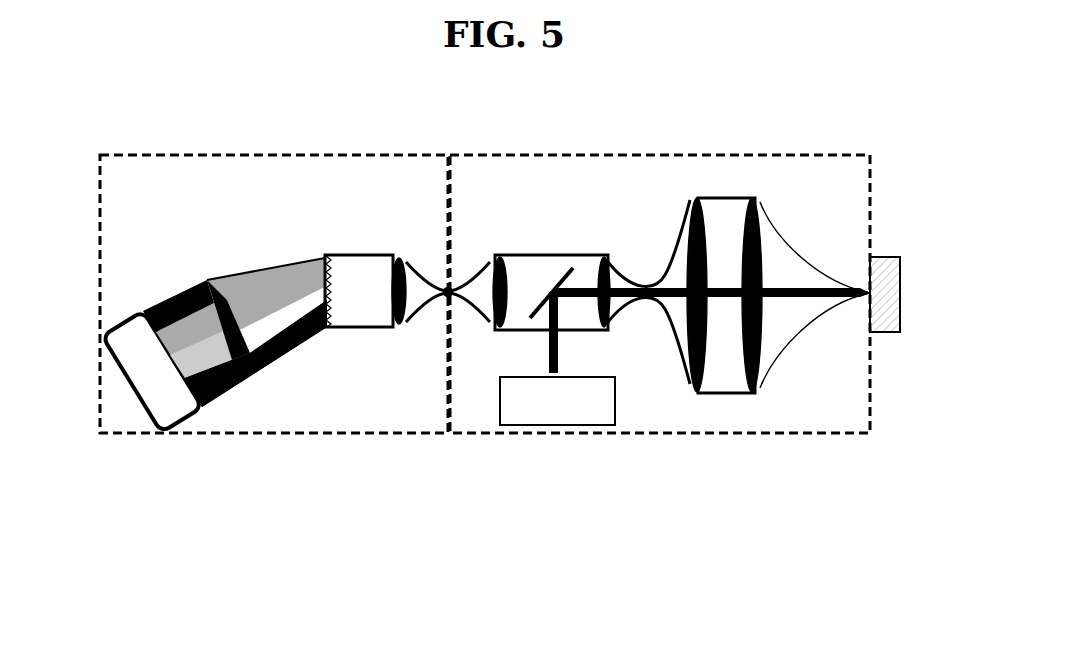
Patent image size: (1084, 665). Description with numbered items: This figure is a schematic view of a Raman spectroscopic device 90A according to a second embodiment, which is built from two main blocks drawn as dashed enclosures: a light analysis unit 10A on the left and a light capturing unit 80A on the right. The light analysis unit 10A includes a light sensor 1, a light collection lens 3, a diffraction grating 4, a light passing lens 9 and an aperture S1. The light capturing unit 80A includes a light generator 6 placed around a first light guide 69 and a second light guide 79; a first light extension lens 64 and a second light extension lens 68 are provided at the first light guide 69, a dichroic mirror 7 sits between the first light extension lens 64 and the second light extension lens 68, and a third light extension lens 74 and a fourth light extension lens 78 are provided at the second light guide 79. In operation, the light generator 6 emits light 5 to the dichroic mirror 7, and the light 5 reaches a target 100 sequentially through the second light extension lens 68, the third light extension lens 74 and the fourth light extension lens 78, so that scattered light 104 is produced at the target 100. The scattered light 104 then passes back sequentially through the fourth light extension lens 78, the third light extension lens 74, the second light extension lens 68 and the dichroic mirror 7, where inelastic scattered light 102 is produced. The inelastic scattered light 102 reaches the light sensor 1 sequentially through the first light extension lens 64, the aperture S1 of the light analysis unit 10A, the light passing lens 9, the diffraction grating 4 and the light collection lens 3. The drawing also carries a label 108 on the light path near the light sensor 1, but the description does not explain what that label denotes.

The light sensor 1 is at (182, 420).
The light collection lens 3 is at (202, 280).
The diffraction grating 4 is at (324, 257).
The light 5 is at (548, 345).
The light generator 6 is at (570, 425).
The dichroic mirror 7 is at (556, 270).
The light passing lens 9 is at (383, 270).
The first light extension lens 64 is at (487, 280).
The second light extension lens 68 is at (615, 285).
The first light guide 69 is at (471, 367).
The third light extension lens 74 is at (705, 222).
The fourth light extension lens 78 is at (740, 353).
The second light guide 79 is at (623, 358).
The light analysis unit 10A is at (100, 395).
The light capturing unit 80A is at (800, 433).
The Raman spectroscopic device 90A is at (465, 396).
The target 100 is at (898, 303).
The inelastic scattered light 102 is at (352, 213).
The scattered light 104 is at (783, 248).
The light flux 108 is at (230, 390).
The aperture S1 is at (445, 298).